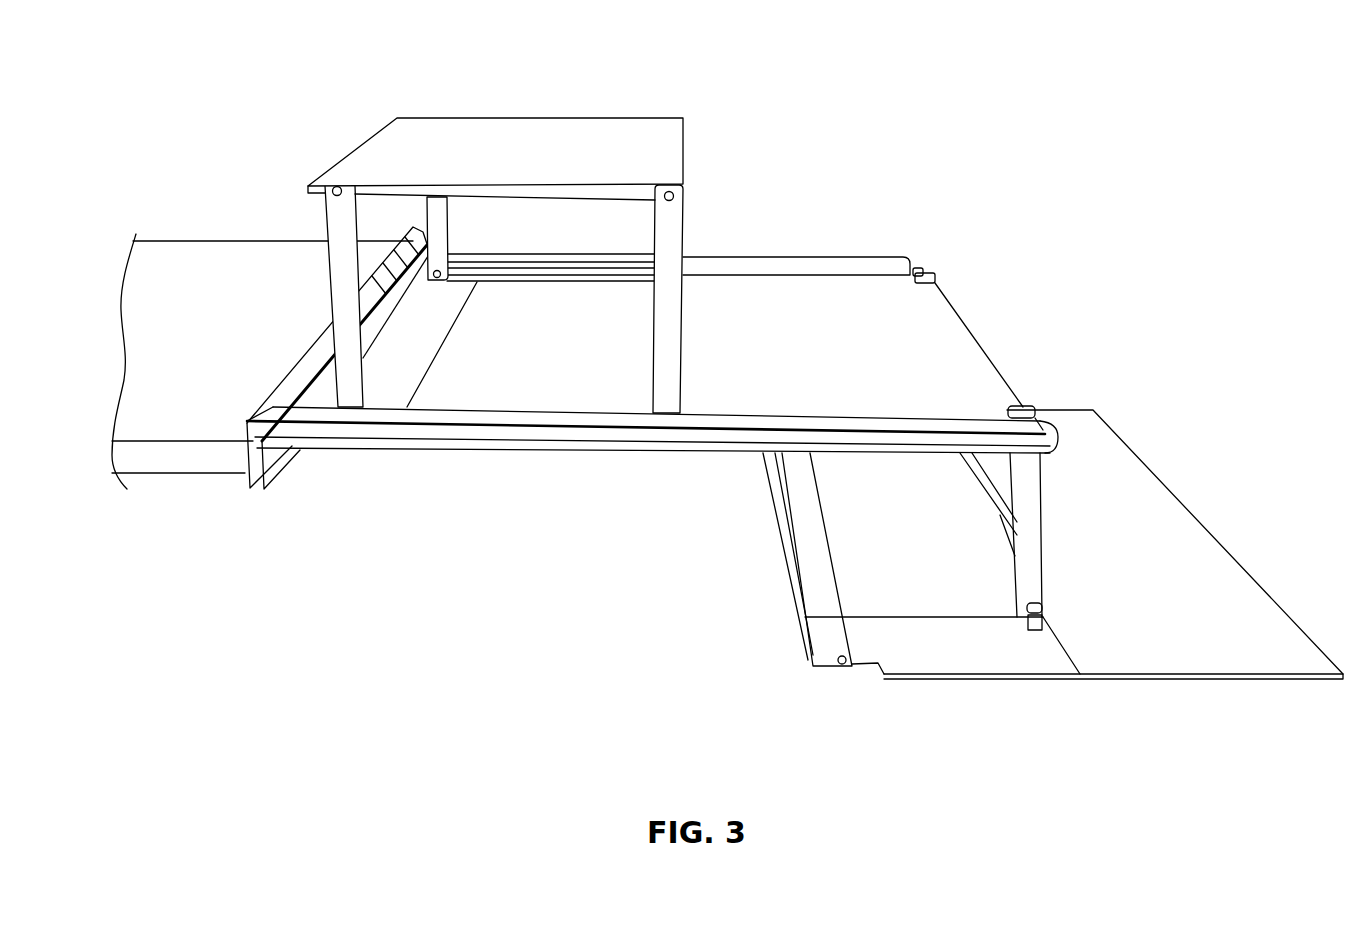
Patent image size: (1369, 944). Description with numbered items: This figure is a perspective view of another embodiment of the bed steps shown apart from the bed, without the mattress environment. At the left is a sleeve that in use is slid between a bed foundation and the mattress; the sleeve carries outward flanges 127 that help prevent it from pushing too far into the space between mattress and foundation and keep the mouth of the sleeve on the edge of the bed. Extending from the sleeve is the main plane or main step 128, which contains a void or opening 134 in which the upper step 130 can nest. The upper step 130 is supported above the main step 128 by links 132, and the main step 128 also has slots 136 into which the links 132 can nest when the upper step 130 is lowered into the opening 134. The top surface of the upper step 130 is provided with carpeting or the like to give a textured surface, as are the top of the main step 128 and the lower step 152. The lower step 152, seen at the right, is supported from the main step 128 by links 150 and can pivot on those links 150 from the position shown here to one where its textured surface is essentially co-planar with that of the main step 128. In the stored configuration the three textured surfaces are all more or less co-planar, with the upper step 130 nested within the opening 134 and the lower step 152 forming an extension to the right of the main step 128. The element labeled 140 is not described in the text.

The outward flanges 127 is at (250, 463).
The main step 128 is at (205, 397).
The upper step 130 is at (600, 333).
The links 132 is at (337, 270).
The opening 134 is at (392, 403).
The slots 136 is at (633, 412).
The top plate 140 is at (523, 158).
The links 150 is at (832, 643).
The lower step 152 is at (1094, 652).